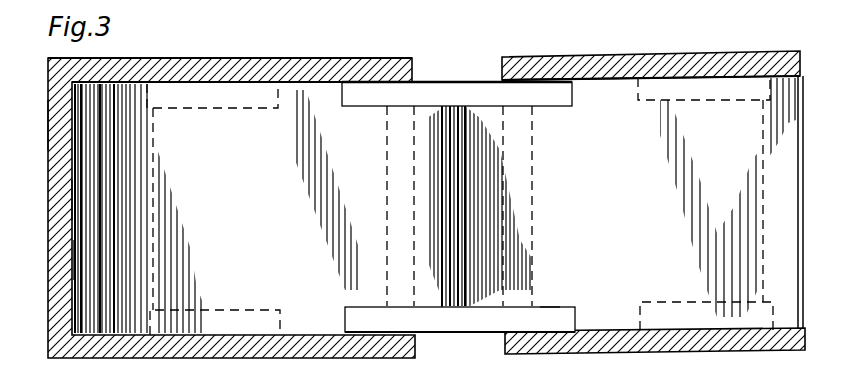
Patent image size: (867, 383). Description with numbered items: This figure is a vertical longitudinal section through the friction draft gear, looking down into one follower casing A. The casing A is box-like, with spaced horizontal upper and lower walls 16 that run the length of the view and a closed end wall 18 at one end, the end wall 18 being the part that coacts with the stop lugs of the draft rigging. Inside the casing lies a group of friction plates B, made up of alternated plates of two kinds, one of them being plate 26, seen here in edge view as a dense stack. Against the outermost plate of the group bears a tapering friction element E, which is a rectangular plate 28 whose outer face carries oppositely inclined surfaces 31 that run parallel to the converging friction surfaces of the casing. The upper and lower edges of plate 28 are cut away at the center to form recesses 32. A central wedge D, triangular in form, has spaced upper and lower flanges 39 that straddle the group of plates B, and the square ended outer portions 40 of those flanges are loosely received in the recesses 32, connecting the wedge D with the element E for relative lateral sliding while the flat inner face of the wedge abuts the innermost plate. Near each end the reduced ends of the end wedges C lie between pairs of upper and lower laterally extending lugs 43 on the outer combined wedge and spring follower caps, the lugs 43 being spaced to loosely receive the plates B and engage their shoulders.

The upper and lower walls 16 is at (215, 58).
The end wall 18 is at (50, 123).
The friction plate 26 is at (85, 260).
The rectangular plate 28 is at (326, 190).
The inclined surfaces 31 is at (457, 216).
The recess 32 is at (430, 105).
The upper and lower flanges 39 is at (470, 84).
The square ended portions 40 is at (568, 94).
The laterally extending lugs 43 is at (193, 107).
The follower casing A is at (149, 58).
The friction plates B is at (113, 208).
The end wedge C is at (77, 199).
The central wedge D is at (545, 311).
The tapering friction element E is at (209, 171).